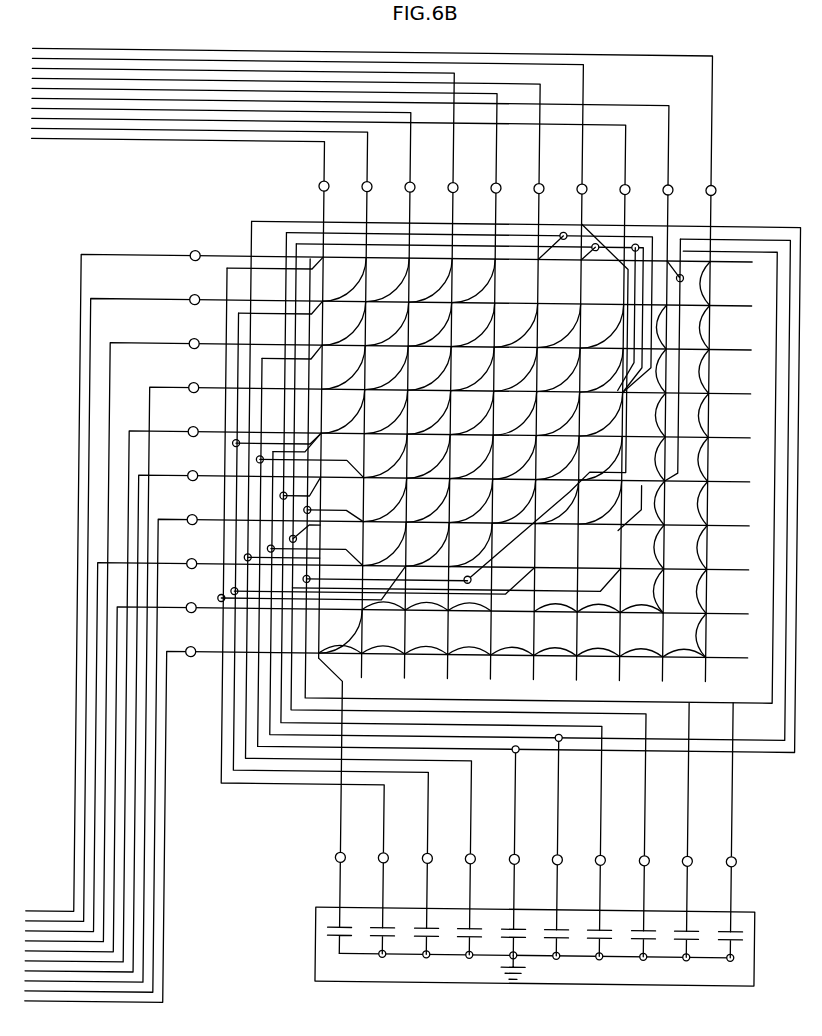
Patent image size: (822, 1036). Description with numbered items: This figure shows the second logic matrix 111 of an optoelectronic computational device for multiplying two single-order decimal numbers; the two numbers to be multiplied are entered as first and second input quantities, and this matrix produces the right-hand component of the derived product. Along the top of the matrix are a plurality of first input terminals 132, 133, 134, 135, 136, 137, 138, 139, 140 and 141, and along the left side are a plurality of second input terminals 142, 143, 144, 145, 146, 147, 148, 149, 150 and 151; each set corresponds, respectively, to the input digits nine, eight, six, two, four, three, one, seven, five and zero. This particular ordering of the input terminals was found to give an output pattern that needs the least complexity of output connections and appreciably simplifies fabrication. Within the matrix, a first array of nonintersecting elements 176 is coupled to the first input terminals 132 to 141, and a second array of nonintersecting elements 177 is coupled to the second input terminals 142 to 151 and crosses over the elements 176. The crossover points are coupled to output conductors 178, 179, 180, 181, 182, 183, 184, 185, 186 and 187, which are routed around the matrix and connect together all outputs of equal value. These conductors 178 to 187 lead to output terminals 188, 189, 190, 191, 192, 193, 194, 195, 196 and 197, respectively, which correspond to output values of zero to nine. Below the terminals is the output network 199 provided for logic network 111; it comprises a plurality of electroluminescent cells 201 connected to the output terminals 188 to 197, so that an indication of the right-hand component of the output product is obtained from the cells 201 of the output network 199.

The second logic matrix 111 is at (245, 207).
The first input terminal 132 is at (316, 187).
The first input terminal 133 is at (359, 187).
The first input terminal 134 is at (402, 187).
The first input terminal 135 is at (445, 187).
The first input terminal 136 is at (488, 187).
The first input terminal 137 is at (531, 187).
The first input terminal 138 is at (574, 187).
The first input terminal 139 is at (617, 187).
The first input terminal 140 is at (660, 187).
The first input terminal 141 is at (703, 187).
The second input terminal 142 is at (192, 253).
The second input terminal 143 is at (192, 297).
The second input terminal 144 is at (192, 341).
The second input terminal 145 is at (192, 385).
The second input terminal 146 is at (192, 429).
The second input terminal 147 is at (192, 473).
The second input terminal 148 is at (192, 517).
The second input terminal 149 is at (192, 561).
The second input terminal 150 is at (192, 605).
The second input terminal 151 is at (192, 649).
The first array of nonintersecting elements 176 is at (371, 668).
The second array of nonintersecting elements 177 is at (731, 310).
The output conductor 178 is at (342, 814).
The output conductor 179 is at (385, 814).
The output conductor 180 is at (429, 814).
The output conductor 181 is at (472, 814).
The output conductor 182 is at (516, 814).
The output conductor 183 is at (559, 814).
The output conductor 184 is at (602, 814).
The output conductor 185 is at (646, 814).
The output conductor 186 is at (689, 814).
The output conductor 187 is at (733, 814).
The output terminal 188 is at (340, 856).
The output terminal 189 is at (383, 856).
The output terminal 190 is at (427, 856).
The output terminal 191 is at (470, 856).
The output terminal 192 is at (514, 856).
The output terminal 193 is at (557, 856).
The output terminal 194 is at (600, 856).
The output terminal 195 is at (644, 856).
The output terminal 196 is at (687, 856).
The output terminal 197 is at (731, 856).
The output network 199 is at (760, 951).
The electroluminescent cell 201 is at (375, 923).